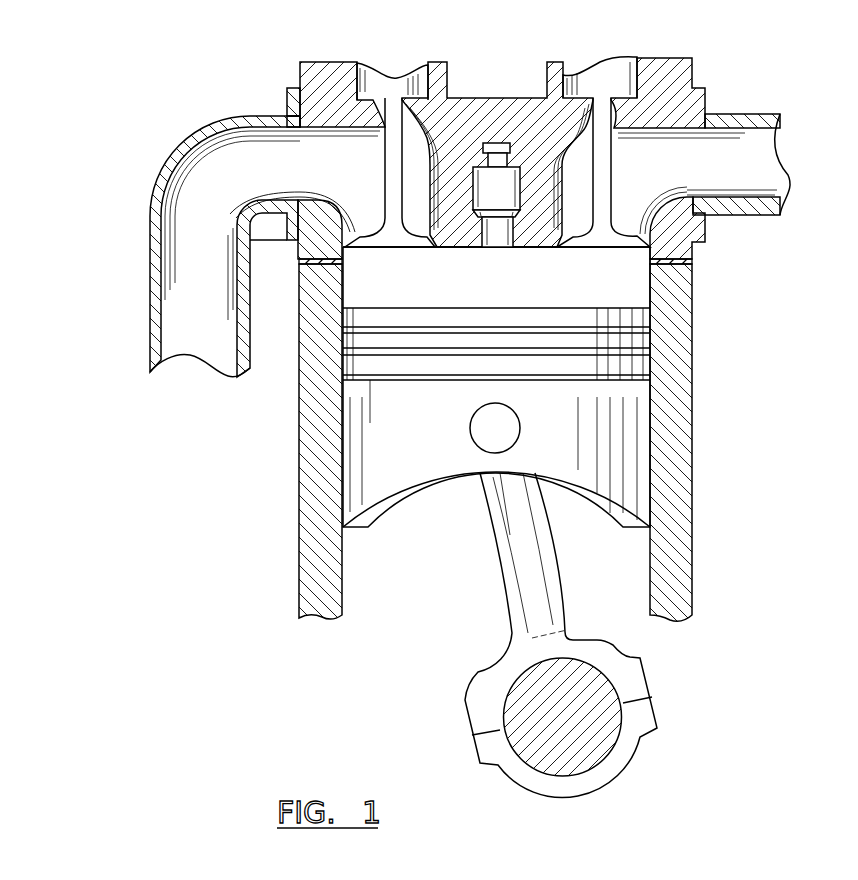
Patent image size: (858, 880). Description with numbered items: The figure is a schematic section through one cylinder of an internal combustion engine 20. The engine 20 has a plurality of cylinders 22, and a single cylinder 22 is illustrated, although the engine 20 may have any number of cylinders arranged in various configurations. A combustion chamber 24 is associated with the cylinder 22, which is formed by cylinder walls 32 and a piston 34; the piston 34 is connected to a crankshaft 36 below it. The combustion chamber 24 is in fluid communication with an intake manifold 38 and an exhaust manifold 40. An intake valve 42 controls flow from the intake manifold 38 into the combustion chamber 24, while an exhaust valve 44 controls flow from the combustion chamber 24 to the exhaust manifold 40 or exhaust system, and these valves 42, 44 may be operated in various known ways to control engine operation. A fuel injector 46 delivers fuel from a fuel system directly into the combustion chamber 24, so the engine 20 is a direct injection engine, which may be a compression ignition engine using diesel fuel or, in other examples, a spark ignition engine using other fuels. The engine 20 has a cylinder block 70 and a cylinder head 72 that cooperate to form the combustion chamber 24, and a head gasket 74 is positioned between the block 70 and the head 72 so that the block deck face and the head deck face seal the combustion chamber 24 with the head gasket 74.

The internal combustion engine 20 is at (183, 62).
The cylinder 22 is at (387, 280).
The combustion chamber 24 is at (547, 280).
The cylinder walls 32 is at (650, 280).
The piston 34 is at (565, 450).
The crankshaft 36 is at (560, 716).
The intake manifold 38 is at (758, 110).
The exhaust manifold 40 is at (221, 122).
The intake valve 42 is at (613, 168).
The exhaust valve 44 is at (388, 172).
The fuel injector 46 is at (497, 143).
The cylinder block 70 is at (693, 424).
The cylinder head 72 is at (705, 252).
The head gasket 74 is at (300, 262).